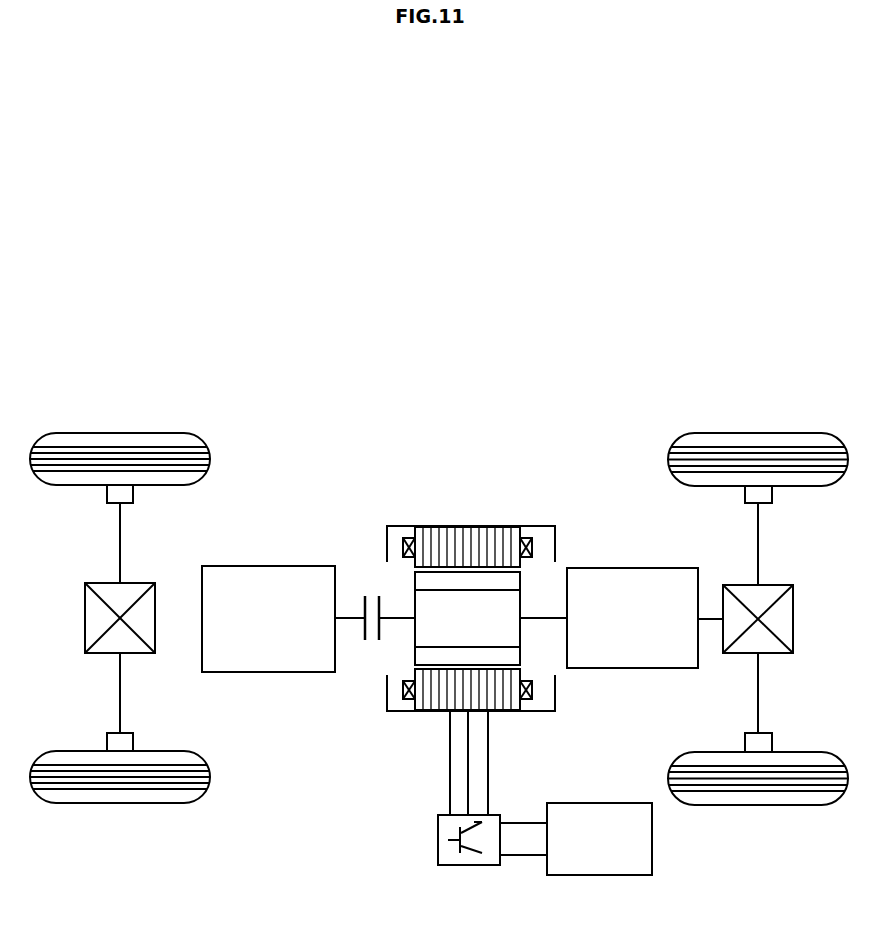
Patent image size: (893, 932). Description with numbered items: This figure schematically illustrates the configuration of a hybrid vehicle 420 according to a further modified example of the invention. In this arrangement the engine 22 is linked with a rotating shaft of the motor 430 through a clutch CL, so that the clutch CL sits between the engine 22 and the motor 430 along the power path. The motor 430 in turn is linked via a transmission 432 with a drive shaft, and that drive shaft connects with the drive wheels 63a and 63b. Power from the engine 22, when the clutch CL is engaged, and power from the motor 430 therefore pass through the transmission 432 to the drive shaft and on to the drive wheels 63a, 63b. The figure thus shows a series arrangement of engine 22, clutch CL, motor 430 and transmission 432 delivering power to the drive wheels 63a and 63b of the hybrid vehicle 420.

The hybrid vehicle 420 is at (412, 335).
The motor 430 is at (468, 527).
The transmission 432 is at (630, 568).
The engine 22 is at (267, 672).
The clutch CL is at (370, 640).
The drive wheel 63a is at (758, 433).
The drive wheel 63b is at (758, 805).